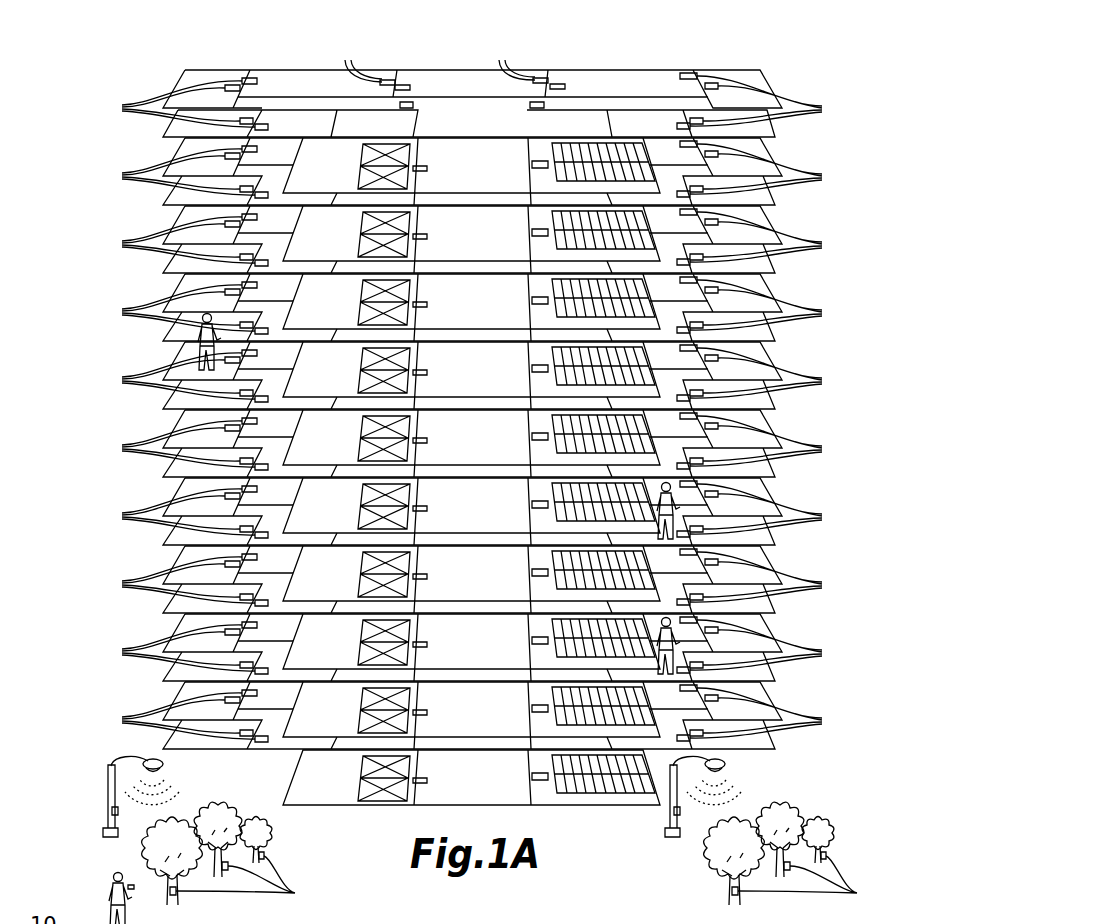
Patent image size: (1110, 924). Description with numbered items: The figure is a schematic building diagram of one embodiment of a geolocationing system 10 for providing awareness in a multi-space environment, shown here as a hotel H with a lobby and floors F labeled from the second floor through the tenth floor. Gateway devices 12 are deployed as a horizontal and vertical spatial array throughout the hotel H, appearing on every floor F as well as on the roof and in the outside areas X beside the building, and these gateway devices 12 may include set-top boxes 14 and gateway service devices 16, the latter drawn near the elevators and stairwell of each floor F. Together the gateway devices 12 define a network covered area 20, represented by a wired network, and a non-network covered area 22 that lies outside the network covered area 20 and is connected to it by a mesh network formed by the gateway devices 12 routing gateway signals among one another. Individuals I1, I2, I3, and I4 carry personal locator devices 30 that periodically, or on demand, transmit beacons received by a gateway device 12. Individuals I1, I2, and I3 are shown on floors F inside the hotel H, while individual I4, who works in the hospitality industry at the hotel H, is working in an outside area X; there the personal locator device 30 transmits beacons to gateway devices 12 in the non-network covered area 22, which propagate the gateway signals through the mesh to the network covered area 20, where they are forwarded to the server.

The geolocationing system 10 is at (92, 131).
The gateway device 12 is at (674, 810).
The set-top box 14 is at (530, 105).
The gateway service device 16 is at (480, 481).
The network covered area 20 is at (808, 487).
The non-network covered area 22 is at (282, 837).
The personal locator device 30 is at (122, 890).
The hotel H is at (783, 58).
The outside area X is at (133, 850).
The floors F is at (698, 923).
The individual I1 is at (198, 348).
The individual I2 is at (685, 512).
The individual I3 is at (685, 647).
The individual I4 is at (108, 890).